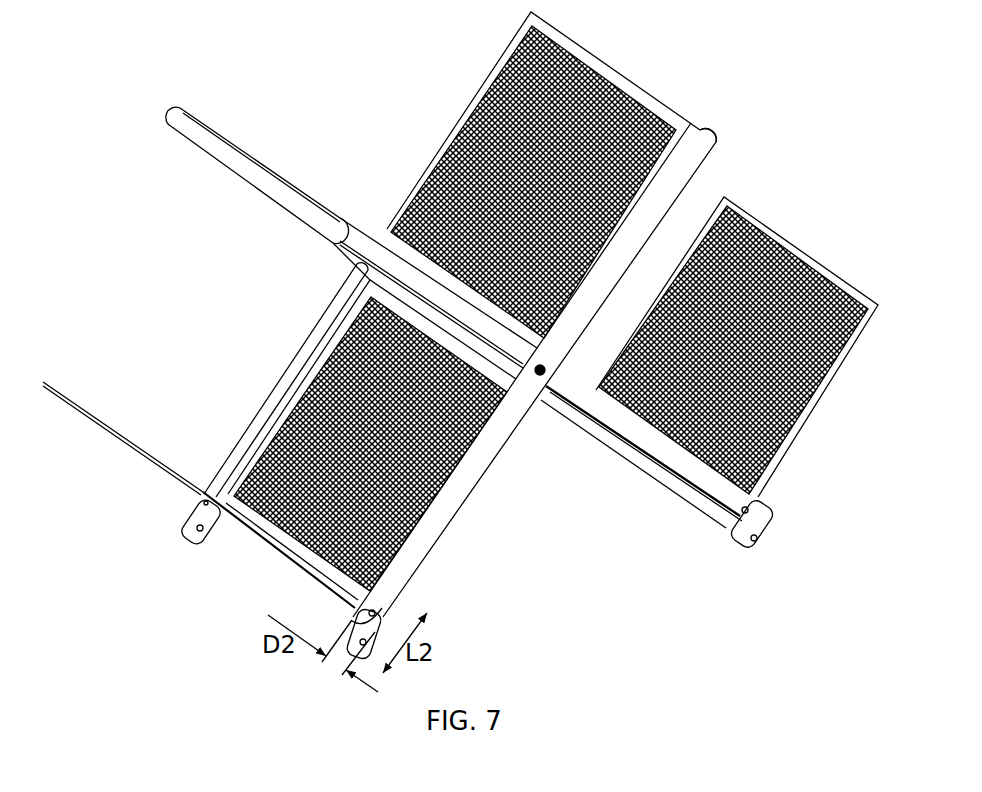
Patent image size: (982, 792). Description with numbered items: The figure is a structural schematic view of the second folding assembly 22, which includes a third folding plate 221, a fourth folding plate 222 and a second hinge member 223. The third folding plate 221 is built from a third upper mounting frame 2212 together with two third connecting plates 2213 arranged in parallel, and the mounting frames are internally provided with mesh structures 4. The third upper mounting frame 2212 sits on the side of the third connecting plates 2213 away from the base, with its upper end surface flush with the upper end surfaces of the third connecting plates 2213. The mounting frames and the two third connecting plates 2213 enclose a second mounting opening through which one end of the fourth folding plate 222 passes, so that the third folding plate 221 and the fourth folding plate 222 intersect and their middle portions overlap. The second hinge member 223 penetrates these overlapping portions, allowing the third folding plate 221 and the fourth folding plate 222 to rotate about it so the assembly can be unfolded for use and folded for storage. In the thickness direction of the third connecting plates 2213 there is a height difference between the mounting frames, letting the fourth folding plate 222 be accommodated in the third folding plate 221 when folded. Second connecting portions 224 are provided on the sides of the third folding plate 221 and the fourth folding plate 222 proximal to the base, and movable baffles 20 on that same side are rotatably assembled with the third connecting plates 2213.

The mesh structure 4 is at (601, 72).
The movable baffle 20 is at (797, 254).
The second folding assembly 22 is at (697, 141).
The third folding plate 221 is at (287, 378).
The third upper mounting frame 2212 is at (453, 128).
The third connecting plate 2213 is at (463, 481).
The fourth folding plate 222 is at (670, 463).
The second hinge member 223 is at (543, 382).
The second connecting portion 224 is at (757, 543).